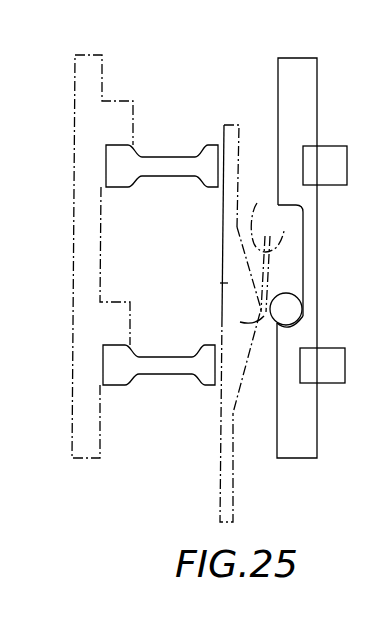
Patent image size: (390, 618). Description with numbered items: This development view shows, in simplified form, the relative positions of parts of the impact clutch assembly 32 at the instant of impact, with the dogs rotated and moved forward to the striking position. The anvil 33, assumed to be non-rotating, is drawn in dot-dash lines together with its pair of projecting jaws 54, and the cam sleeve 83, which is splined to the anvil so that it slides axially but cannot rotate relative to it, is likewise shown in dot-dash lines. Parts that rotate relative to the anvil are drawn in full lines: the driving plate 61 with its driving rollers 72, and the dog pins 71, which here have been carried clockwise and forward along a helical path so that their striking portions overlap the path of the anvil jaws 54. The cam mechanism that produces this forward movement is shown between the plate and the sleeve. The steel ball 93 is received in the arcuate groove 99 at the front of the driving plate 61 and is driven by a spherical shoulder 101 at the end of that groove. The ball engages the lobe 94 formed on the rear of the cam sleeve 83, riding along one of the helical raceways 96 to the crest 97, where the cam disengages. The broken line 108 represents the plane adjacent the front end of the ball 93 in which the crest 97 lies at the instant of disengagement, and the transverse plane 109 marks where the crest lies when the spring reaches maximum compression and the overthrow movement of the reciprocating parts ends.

The impact clutch assembly 32 is at (213, 57).
The anvil 33 is at (72, 425).
The jaws 54 is at (132, 118).
The driving plate 61 is at (307, 89).
The dog pins 71 is at (160, 367).
The driving rollers 72 is at (336, 152).
The cam sleeve 83 is at (235, 490).
The ball 93 is at (293, 298).
The lobe 94 is at (220, 283).
The raceways 96 is at (245, 372).
The crest 97 is at (240, 322).
The arcuate groove 99 is at (298, 268).
The shoulder 101 is at (286, 328).
The broken line 108 is at (283, 261).
The transverse plane 109 is at (264, 216).